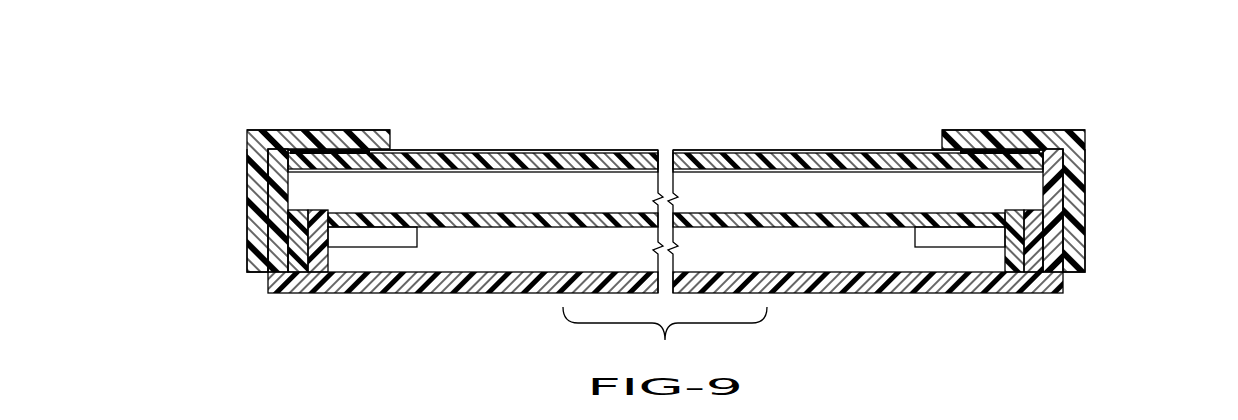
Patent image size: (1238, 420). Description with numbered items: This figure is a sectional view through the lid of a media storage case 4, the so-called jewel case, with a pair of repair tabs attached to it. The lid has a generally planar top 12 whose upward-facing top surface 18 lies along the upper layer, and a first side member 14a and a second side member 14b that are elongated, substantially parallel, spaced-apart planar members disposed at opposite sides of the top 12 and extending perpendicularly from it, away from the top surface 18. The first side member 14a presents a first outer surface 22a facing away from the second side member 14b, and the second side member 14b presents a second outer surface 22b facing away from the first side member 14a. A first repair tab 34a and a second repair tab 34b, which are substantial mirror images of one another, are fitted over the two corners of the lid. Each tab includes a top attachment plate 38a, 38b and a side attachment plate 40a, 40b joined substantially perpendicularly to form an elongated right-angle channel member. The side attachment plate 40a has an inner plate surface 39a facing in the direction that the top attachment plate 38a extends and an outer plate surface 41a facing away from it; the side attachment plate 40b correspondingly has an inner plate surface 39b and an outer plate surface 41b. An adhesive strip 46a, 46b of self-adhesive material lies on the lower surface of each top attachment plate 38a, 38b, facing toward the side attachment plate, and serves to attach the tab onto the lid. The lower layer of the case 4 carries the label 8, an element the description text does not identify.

The media storage case 4 is at (396, 310).
The bottom substrate 8 is at (505, 296).
The top 12 is at (603, 150).
The first side member 14a is at (276, 259).
The second side member 14b is at (1055, 260).
The top surface 18 is at (525, 150).
The first outer surface 22a is at (272, 240).
The second outer surface 22b is at (1062, 240).
The first repair tab 34a is at (260, 118).
The second repair tab 34b is at (1076, 118).
The top attachment plate 38a is at (386, 129).
The top attachment plate 38b is at (952, 129).
The inner plate surface 39a is at (273, 192).
The inner wall 39b is at (1050, 192).
The side attachment plate 40a is at (251, 178).
The side attachment plate 40b is at (1083, 180).
The outer plate surface 41a is at (251, 203).
The wall interface 41b is at (1083, 205).
The adhesive strip 46a is at (354, 150).
The adhesive strip 46b is at (968, 150).